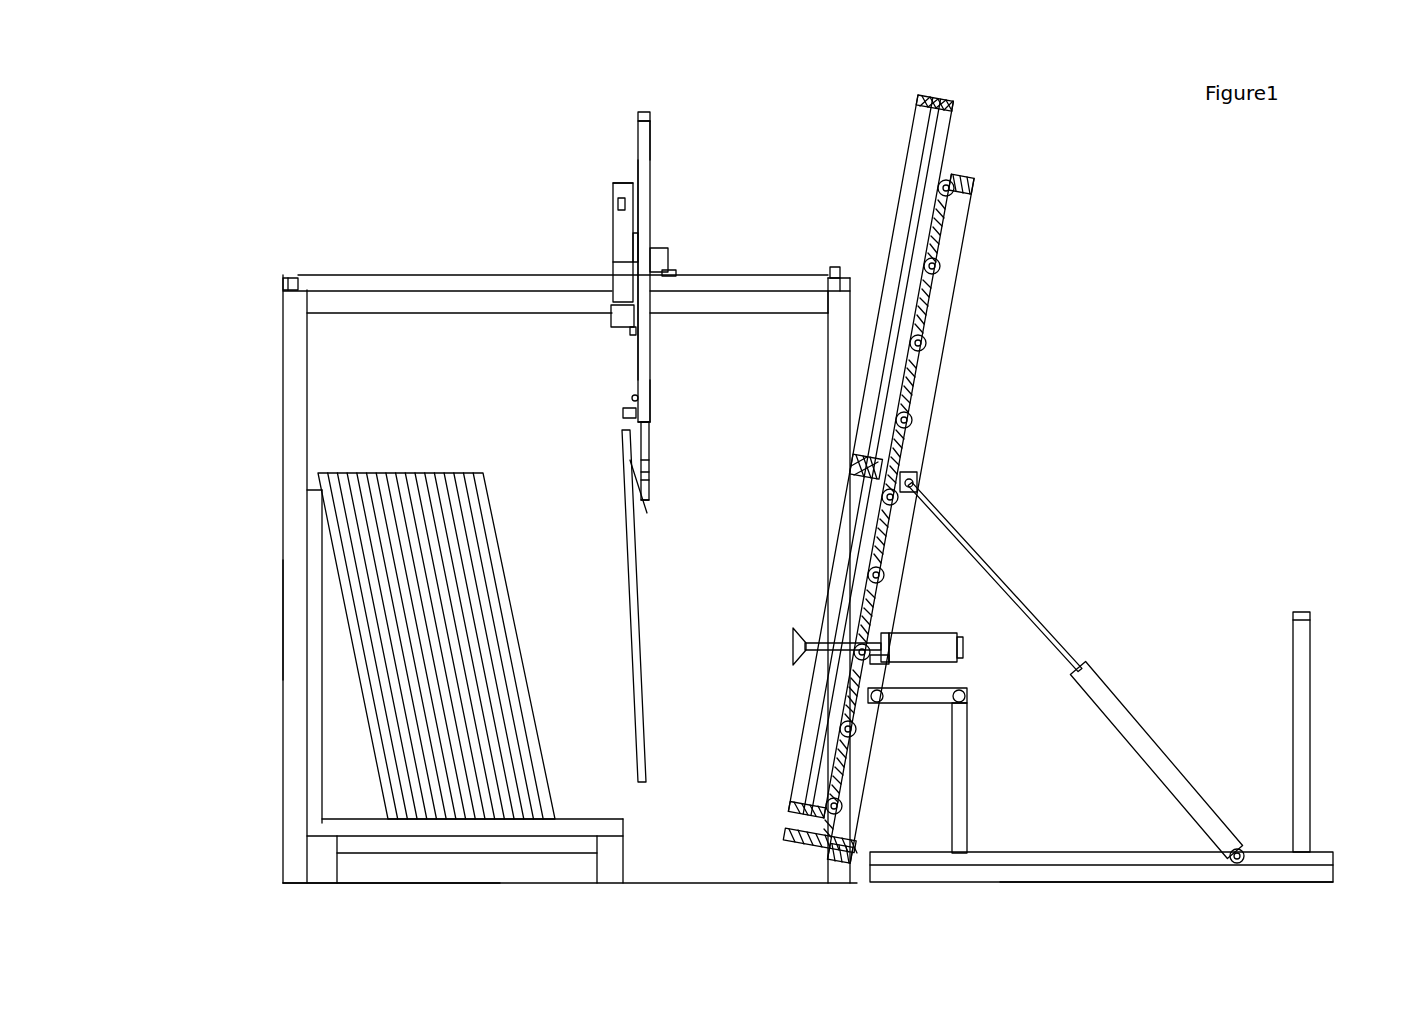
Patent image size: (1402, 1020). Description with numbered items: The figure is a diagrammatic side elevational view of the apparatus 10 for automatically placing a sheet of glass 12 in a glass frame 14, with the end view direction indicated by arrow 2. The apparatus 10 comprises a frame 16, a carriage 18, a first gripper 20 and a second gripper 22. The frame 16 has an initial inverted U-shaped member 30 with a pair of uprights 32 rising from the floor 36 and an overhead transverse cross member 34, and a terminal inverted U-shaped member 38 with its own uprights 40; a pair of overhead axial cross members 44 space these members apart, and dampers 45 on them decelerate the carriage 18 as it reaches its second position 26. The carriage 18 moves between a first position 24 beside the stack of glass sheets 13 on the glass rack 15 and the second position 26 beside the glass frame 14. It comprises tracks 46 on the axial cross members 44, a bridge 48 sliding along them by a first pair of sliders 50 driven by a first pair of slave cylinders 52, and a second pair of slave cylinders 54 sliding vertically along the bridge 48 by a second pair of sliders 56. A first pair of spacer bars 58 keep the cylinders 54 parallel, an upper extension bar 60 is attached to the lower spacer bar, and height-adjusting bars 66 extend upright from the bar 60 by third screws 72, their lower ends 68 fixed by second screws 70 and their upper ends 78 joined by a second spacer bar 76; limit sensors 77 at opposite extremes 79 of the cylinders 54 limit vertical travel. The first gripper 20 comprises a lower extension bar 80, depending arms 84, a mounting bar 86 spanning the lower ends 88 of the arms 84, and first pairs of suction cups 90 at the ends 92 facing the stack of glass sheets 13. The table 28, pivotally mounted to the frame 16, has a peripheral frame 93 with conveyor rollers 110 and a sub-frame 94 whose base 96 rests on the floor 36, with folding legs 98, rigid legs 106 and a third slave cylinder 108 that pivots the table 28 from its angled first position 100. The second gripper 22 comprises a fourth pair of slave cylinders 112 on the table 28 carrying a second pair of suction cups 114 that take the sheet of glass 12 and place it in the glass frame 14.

The apparatus 10 is at (351, 154).
The arrow 2 is at (496, 213).
The sheet of glass 12 is at (630, 633).
The stack of glass sheets 13 is at (400, 495).
The glass frame 14 is at (820, 700).
The glass rack 15 is at (320, 735).
The frame 16 is at (279, 338).
The carriage 18 is at (631, 139).
The first gripper 20 is at (657, 440).
The second gripper 22 is at (917, 628).
The first position 24 is at (477, 358).
The second position 26 is at (804, 370).
The table 28 is at (960, 299).
The initial inverted U-shaped member 30 is at (278, 460).
The uprights 32 is at (290, 615).
The overhead transverse cross member 34 is at (285, 278).
The floor 36 is at (848, 924).
The terminal inverted U-shaped member 38 is at (829, 457).
The uprights 40 is at (832, 430).
The overhead axial cross members 44 is at (368, 314).
The dampers 45 is at (836, 272).
The tracks 46 is at (415, 277).
The bridge 48 is at (660, 250).
The first pair of sliders 50 is at (674, 272).
The first pair of slave cylinders 52 is at (792, 277).
The second pair of slave cylinders 54 is at (622, 246).
The second pair of sliders 56 is at (625, 262).
The first pair of spacer bars 58 is at (616, 183).
The upper extension bar 60 is at (614, 318).
The height-adjusting bars 66 is at (652, 160).
The lower ends 68 is at (648, 412).
The second screws 70 is at (632, 398).
The third screws 72 is at (634, 335).
The second spacer bar 76 is at (650, 112).
The limit sensors 77 is at (618, 204).
The upper ends 78 is at (652, 148).
The opposite extremes 79 is at (616, 196).
The lower extension bar 80 is at (623, 414).
The arms 84 is at (649, 460).
The mounting bar 86 is at (658, 480).
The lower ends 88 is at (650, 471).
The first pair of suction cups 90 is at (640, 520).
The ends 92 is at (651, 499).
The peripheral frame 93 is at (936, 412).
The sub-frame 94 is at (1150, 880).
The base 96 is at (1020, 853).
The folding legs 98 is at (963, 765).
The first position 100 is at (943, 72).
The rigid legs 106 is at (1300, 820).
The third slave cylinder 108 is at (1145, 735).
The conveyor rollers 110 is at (940, 348).
The fourth pair of slave cylinders 112 is at (950, 648).
The second pair of suction cups 114 is at (792, 648).